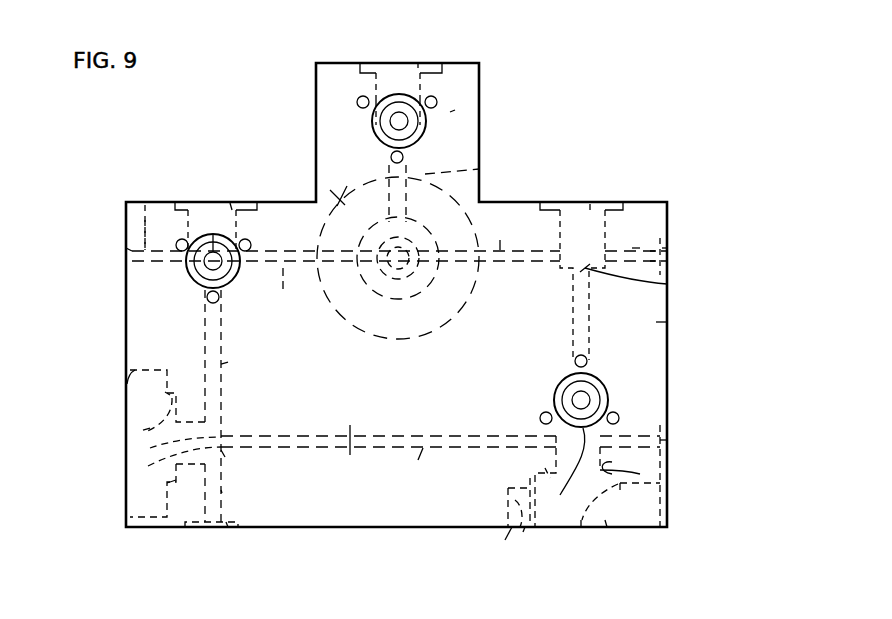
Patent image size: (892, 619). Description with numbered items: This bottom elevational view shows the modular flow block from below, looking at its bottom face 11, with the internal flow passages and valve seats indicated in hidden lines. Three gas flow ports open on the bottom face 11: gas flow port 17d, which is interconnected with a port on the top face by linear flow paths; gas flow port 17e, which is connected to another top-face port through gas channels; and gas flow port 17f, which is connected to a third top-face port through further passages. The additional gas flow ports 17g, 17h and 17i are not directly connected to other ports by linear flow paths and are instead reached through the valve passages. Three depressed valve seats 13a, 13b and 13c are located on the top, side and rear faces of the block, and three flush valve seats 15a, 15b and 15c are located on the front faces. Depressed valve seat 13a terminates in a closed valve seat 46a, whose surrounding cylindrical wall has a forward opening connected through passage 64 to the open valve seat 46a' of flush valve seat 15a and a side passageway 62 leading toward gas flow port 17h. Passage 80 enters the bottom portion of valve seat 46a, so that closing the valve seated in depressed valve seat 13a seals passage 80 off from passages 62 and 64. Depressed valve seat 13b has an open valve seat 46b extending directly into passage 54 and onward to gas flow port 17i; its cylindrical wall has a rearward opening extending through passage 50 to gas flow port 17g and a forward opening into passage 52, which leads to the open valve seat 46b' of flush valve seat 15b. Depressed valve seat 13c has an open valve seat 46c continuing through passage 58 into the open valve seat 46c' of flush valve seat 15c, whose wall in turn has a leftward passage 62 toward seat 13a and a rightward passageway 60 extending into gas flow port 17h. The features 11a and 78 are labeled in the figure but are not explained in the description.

The bottom face 11 is at (406, 377).
The auxiliary bore 11a is at (467, 160).
The depressed valve seat 13a is at (462, 300).
The depressed valve seat 13b is at (143, 430).
The depressed valve seat 13c is at (605, 520).
The flush valve seat 15a is at (418, 68).
The flush valve seat 15b is at (230, 203).
The flush valve seat 15c is at (590, 210).
The gas flow port 17d is at (192, 279).
The gas flow port 17e is at (415, 122).
The gas flow port 17f is at (606, 400).
The gas flow port 17g is at (228, 527).
The gas flow port 17h is at (668, 248).
The gas flow port 17i is at (667, 440).
The closed valve seat 46a is at (331, 199).
The open valve seat 46a' is at (505, 95).
The open valve seat 46b is at (137, 473).
The open valve seat 46b' is at (192, 187).
The open valve seat 46c is at (560, 506).
The open valve seat 46c' is at (671, 265).
The passage 50 is at (222, 493).
The passage 52 is at (228, 362).
The passage 54 is at (423, 448).
The passage 58 is at (667, 322).
The passageway 60 is at (632, 248).
The side passageway 62 is at (500, 250).
The passage 64 is at (479, 169).
The vent passage 78 is at (145, 220).
The passage 80 is at (283, 293).